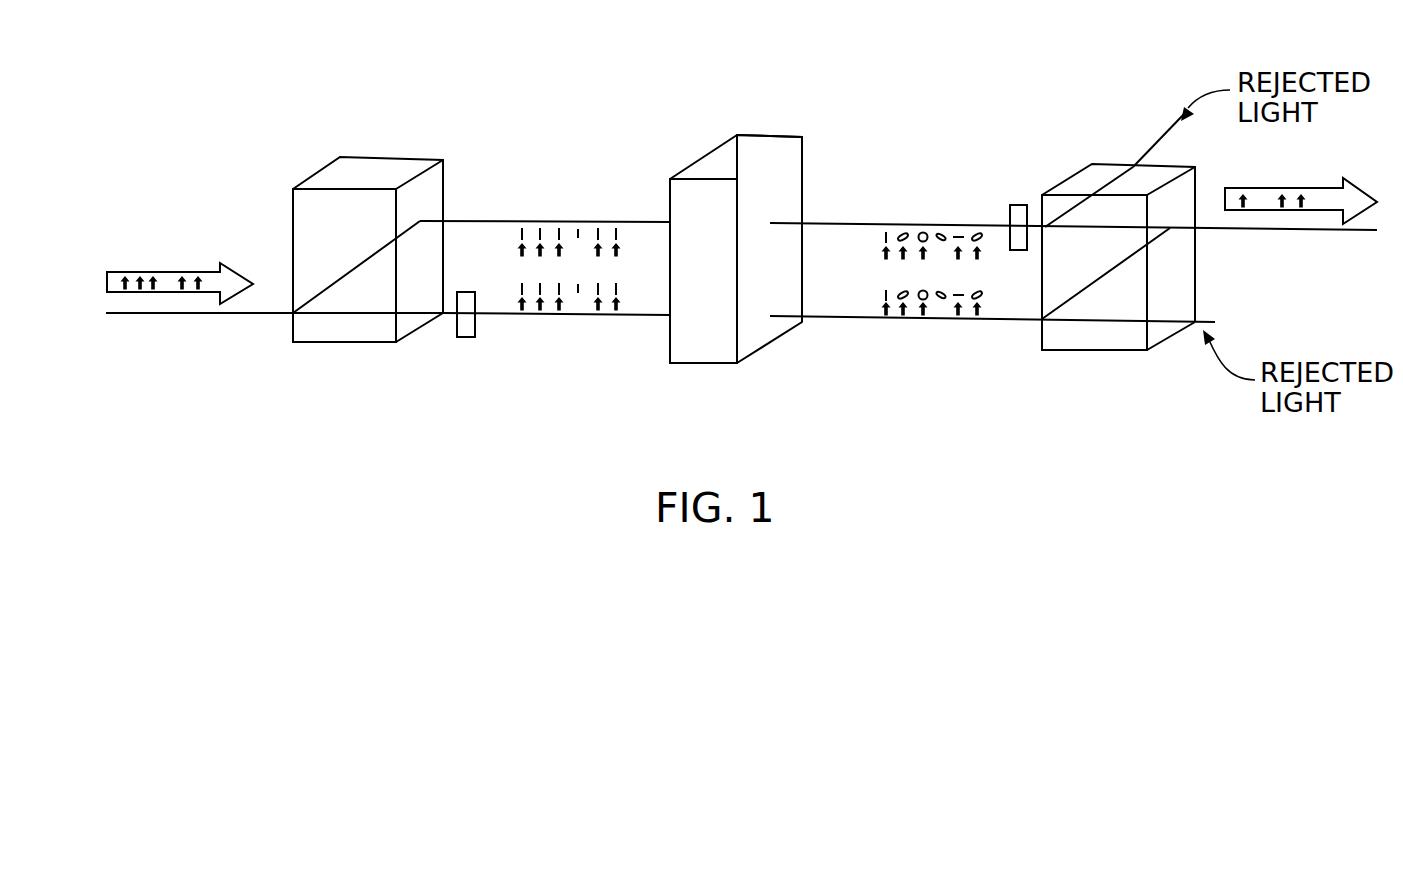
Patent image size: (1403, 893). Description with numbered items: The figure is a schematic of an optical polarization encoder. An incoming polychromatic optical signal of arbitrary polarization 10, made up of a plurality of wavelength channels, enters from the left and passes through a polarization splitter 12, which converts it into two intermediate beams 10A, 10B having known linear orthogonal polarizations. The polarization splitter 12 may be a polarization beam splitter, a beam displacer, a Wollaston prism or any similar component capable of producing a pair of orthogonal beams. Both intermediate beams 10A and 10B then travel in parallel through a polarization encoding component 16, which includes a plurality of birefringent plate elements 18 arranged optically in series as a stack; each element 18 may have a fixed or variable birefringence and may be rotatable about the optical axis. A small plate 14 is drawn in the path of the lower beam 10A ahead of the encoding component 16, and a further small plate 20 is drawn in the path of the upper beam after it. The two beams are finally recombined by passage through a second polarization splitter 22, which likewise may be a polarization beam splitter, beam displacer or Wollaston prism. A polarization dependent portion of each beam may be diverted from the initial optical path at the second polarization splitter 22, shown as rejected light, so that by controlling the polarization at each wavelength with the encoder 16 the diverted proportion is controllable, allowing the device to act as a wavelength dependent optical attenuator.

The incoming polychromatic optical signal of arbitrary polarization 10 is at (169, 343).
The intermediate beam 10A is at (568, 336).
The intermediate beam 10B is at (588, 200).
The polarization splitter 12 is at (338, 368).
The half-wave plate 14 is at (454, 353).
The polarization encoding component 16 is at (703, 385).
The birefringent plate elements 18 is at (766, 118).
The wave plate 20 is at (1010, 187).
The second polarization splitter 22 is at (1084, 382).